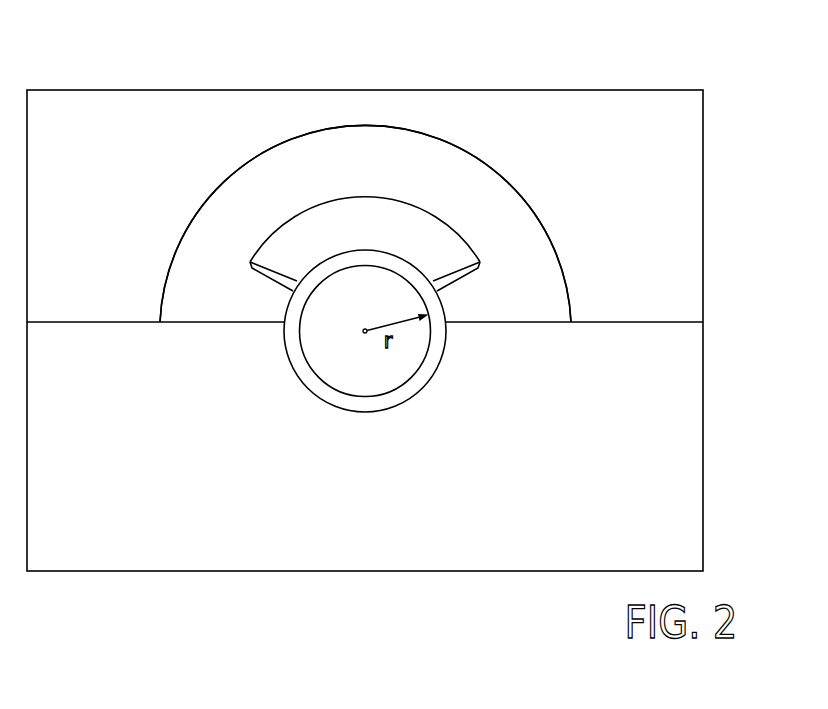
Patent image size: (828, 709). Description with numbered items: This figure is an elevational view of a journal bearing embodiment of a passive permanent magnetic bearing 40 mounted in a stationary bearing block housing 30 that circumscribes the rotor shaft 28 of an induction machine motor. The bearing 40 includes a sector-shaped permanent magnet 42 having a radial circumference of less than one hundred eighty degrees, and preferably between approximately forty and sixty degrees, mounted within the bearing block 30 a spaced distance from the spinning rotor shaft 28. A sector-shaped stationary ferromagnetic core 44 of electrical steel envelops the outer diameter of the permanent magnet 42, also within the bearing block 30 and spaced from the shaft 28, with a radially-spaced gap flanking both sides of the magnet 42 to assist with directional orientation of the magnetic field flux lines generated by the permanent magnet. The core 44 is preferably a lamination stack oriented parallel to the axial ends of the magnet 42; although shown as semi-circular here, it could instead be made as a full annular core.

The rotor shaft 28 is at (367, 368).
The bearing housing 30 is at (727, 435).
The permanent magnetic bearing 40 is at (542, 193).
The sector-shaped permanent magnet 42 is at (417, 230).
The ferromagnetic core 44 is at (537, 255).